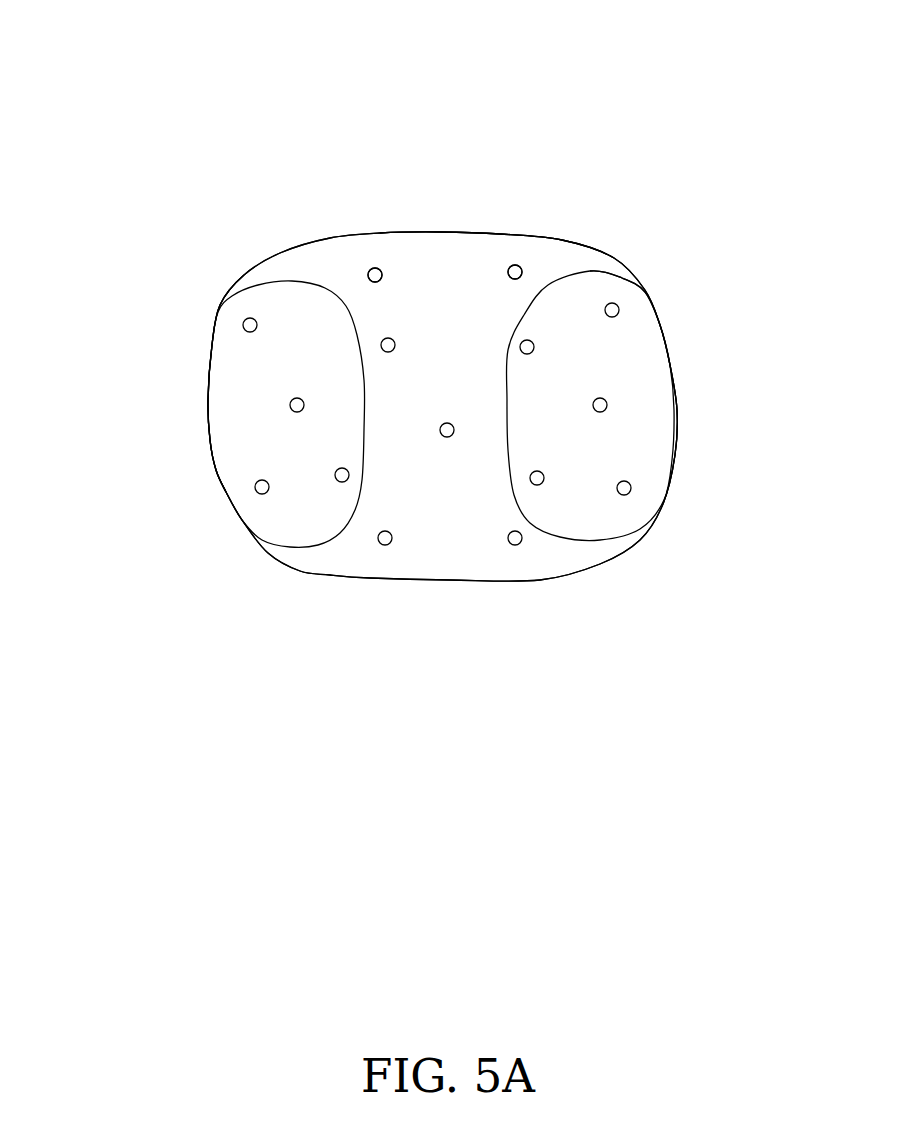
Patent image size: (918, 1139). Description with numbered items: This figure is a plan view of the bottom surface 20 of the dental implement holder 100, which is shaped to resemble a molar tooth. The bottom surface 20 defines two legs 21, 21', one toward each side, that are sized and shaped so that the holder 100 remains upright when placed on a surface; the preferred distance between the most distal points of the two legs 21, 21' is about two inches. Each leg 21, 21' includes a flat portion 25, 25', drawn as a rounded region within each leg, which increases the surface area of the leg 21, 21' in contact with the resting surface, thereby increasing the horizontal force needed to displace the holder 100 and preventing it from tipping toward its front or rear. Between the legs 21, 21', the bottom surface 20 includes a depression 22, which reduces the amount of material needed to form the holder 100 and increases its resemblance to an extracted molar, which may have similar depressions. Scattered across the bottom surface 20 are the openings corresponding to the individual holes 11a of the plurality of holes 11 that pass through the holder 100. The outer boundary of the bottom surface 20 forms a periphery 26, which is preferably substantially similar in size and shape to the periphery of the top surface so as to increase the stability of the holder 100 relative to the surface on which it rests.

The holder 100 is at (100, 106).
The plurality of holes 11 is at (562, 137).
The individual hole 11a is at (376, 268).
The bottom surface 20 is at (376, 610).
The leg 21 is at (162, 397).
The leg 21' is at (736, 442).
The depression 22 is at (556, 248).
The flat portion 25 is at (236, 414).
The flat portion 25' is at (631, 406).
The periphery 26 is at (630, 272).